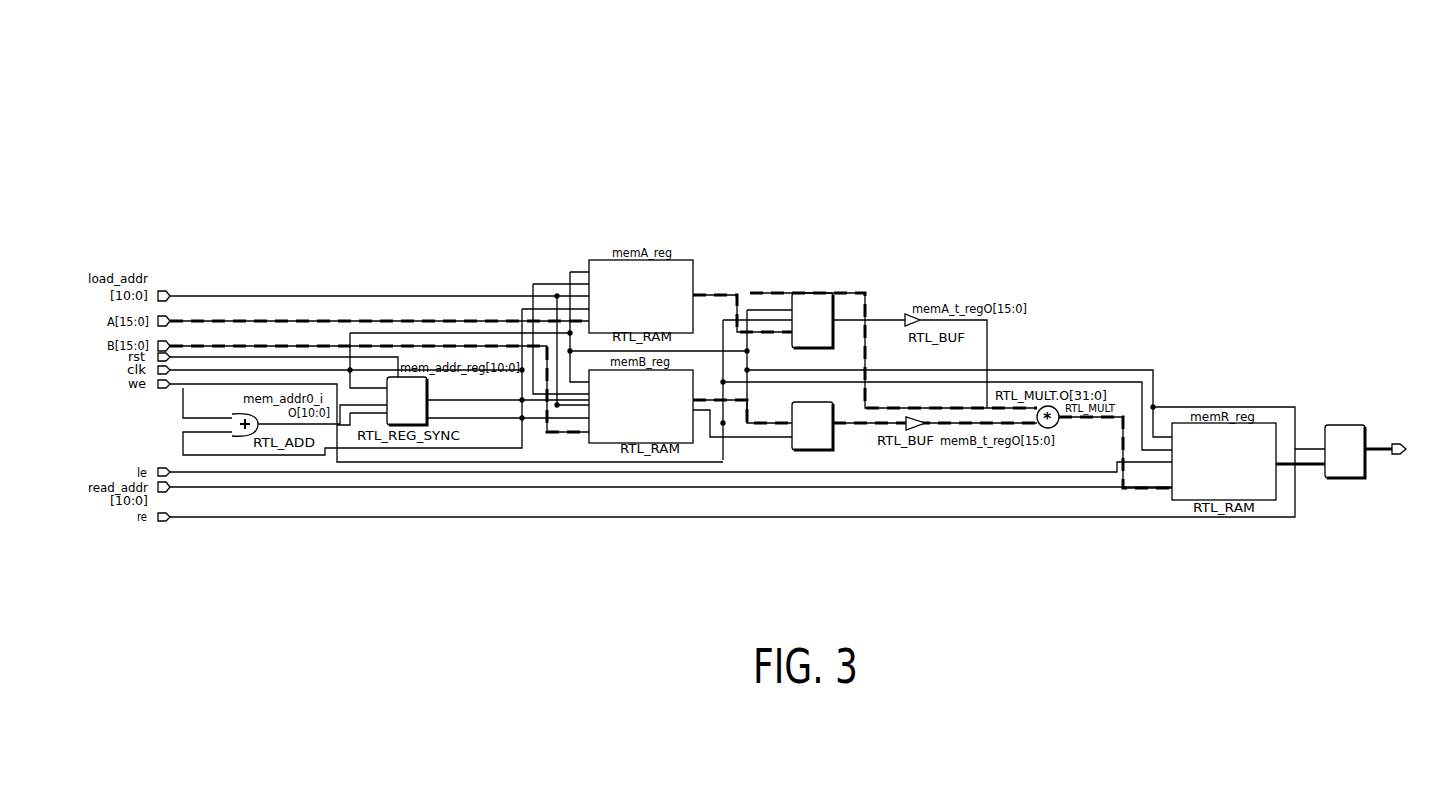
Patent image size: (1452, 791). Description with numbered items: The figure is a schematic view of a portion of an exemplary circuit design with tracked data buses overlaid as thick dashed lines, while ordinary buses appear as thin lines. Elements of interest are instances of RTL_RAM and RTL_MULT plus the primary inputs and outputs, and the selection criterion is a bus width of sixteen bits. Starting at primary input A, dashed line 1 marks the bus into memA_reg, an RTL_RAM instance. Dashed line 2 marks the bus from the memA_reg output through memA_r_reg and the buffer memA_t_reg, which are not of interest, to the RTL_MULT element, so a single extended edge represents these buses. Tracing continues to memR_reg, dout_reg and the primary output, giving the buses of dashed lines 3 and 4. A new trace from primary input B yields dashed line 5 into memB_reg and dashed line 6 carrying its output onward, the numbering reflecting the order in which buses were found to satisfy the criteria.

The dashed line 1 is at (379, 305).
The dashed line 5 is at (446, 405).
The dashed line 2 is at (823, 309).
The dashed line 6 is at (848, 436).
The dashed line 3 is at (1115, 452).
The dashed line 4 is at (1369, 452).